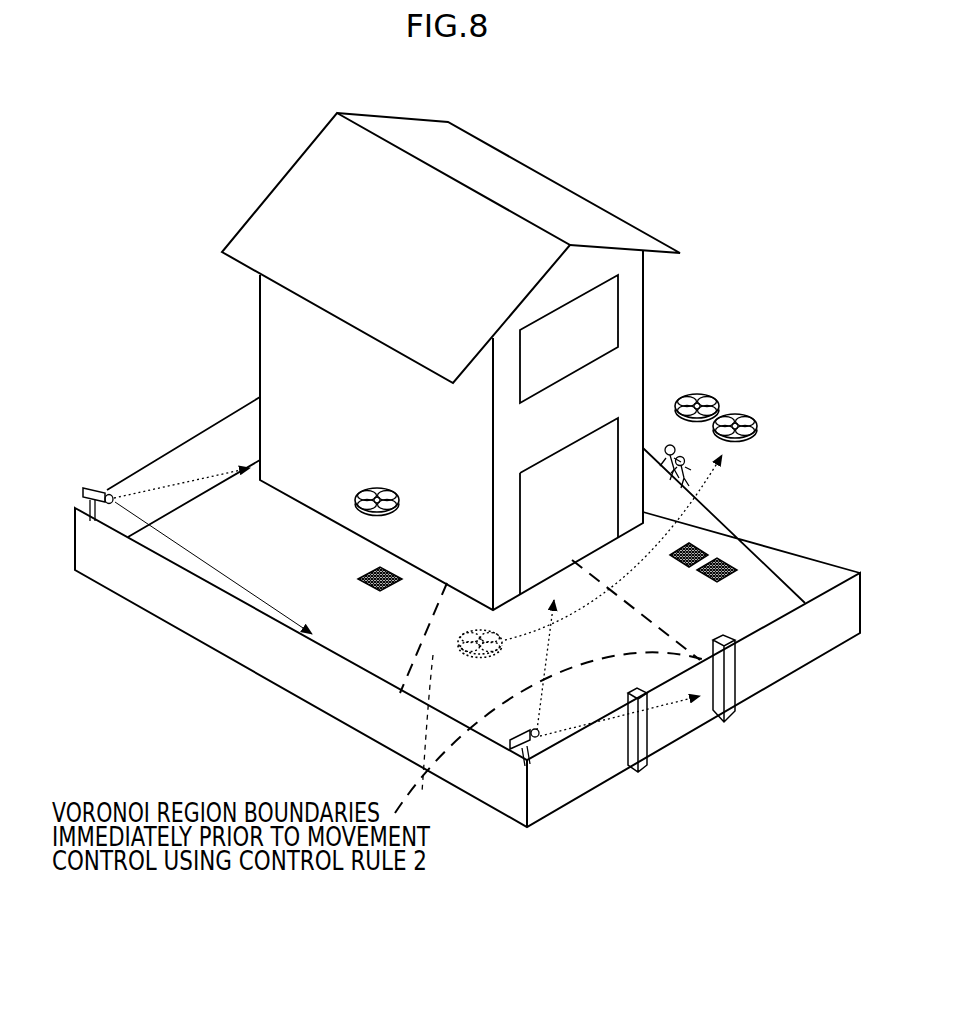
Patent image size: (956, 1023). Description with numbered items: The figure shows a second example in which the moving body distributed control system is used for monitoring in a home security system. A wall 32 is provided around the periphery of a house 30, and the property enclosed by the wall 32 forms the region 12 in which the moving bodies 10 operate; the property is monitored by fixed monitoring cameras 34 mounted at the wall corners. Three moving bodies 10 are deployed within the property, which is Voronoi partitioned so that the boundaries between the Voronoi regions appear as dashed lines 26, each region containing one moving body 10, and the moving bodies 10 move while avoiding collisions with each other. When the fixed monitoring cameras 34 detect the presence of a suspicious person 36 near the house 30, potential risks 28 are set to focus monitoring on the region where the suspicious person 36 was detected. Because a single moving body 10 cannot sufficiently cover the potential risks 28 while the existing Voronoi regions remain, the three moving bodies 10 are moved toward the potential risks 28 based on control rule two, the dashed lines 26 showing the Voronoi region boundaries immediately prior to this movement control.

The moving body 10 is at (393, 490).
The region 12 is at (244, 556).
The dashed lines 26 is at (430, 624).
The potential risks 28 is at (374, 567).
The house 30 is at (548, 181).
The wall 32 is at (195, 627).
The fixed monitoring cameras 34 is at (95, 487).
The suspicious person 36 is at (667, 443).